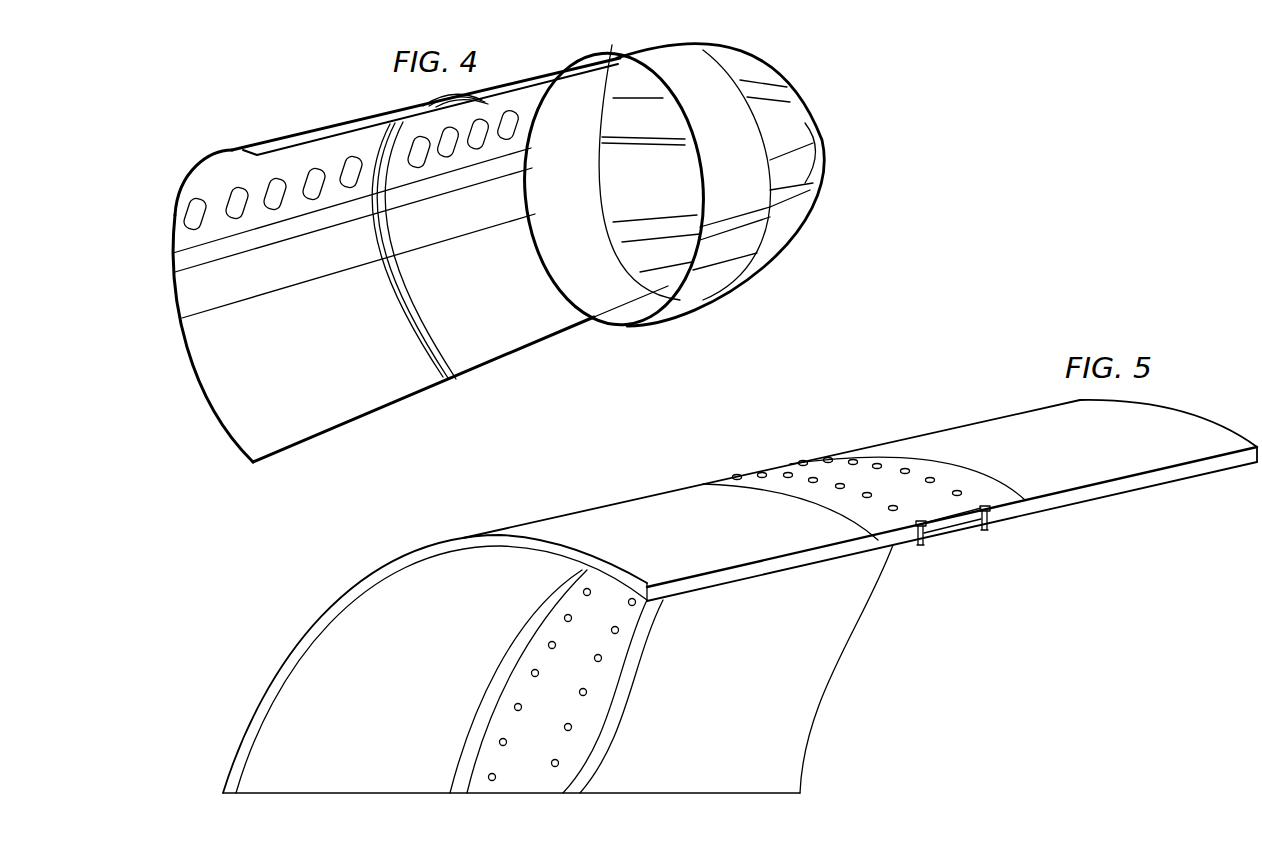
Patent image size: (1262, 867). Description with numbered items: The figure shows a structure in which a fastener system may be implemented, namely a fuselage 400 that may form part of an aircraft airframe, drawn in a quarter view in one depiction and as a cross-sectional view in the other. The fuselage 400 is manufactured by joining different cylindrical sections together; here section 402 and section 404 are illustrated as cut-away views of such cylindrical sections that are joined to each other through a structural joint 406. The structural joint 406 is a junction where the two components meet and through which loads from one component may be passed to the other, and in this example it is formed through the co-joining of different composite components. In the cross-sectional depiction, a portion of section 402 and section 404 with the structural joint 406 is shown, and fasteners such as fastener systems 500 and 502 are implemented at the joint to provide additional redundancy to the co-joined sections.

In FIG. 4, the fuselage 400 is at (757, 61).
In FIG. 4, the section 402 is at (620, 57).
In FIG. 5, the section 402 is at (990, 418).
In FIG. 4, the section 404 is at (313, 128).
In FIG. 5, the section 404 is at (588, 508).
In FIG. 4, the structural joint 406 is at (455, 380).
In FIG. 5, the structural joint 406 is at (790, 462).
In FIG. 5, the fastener system 500 is at (921, 547).
In FIG. 5, the fastener system 502 is at (986, 532).